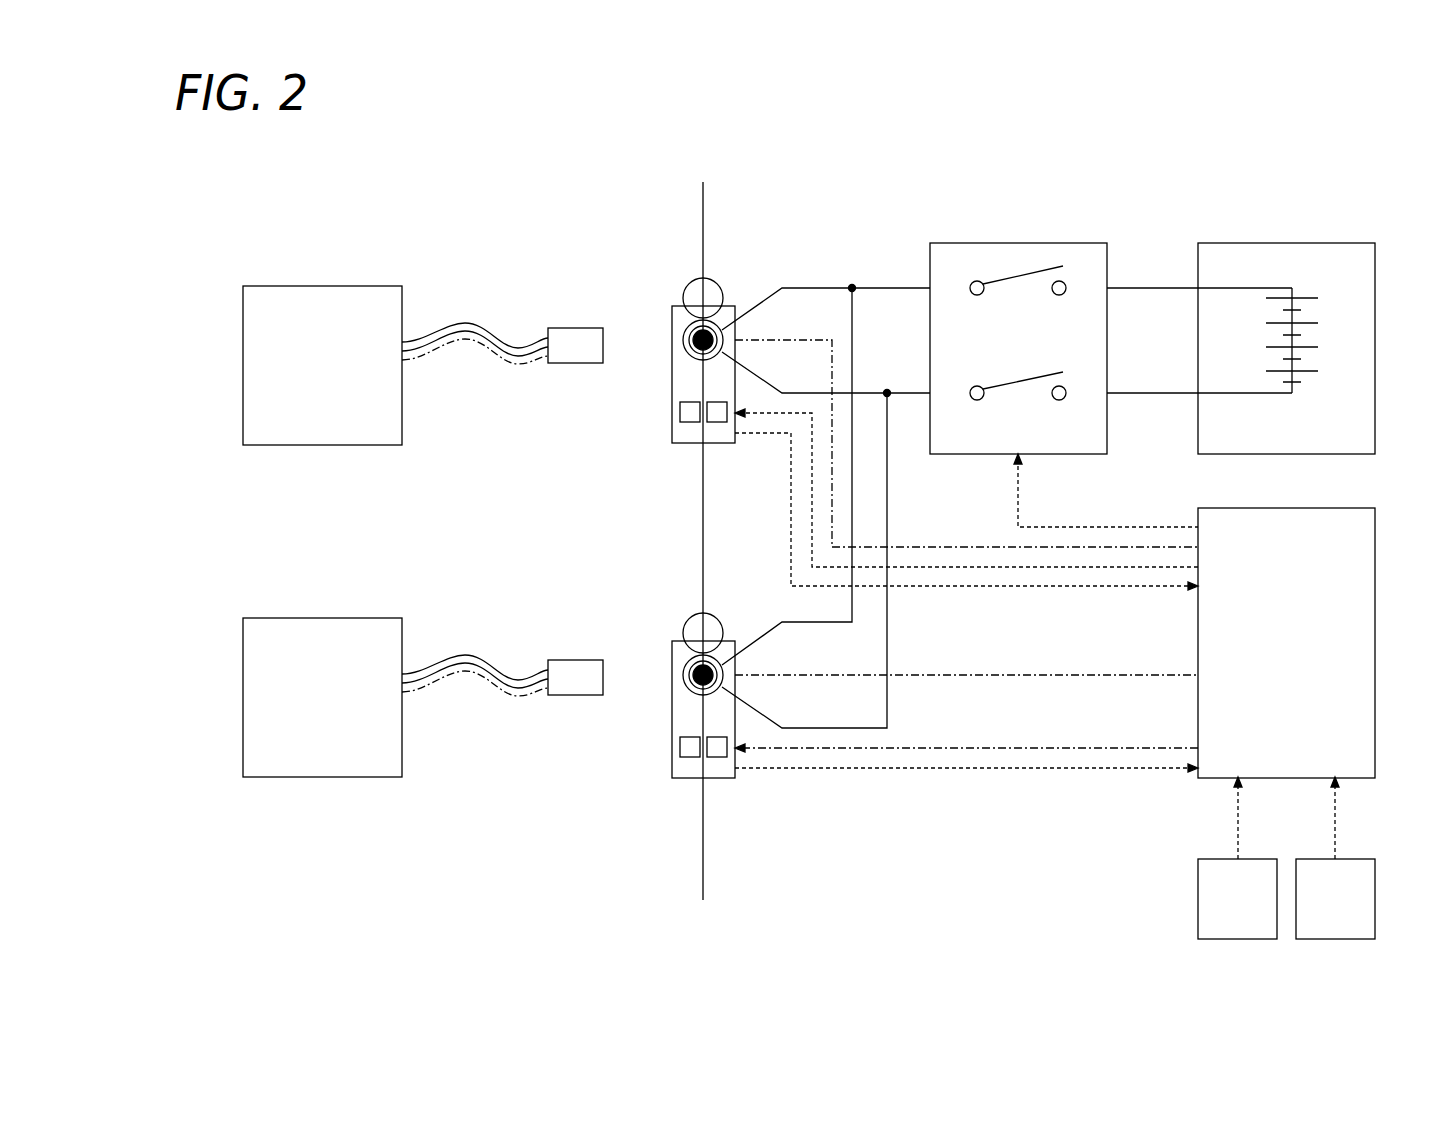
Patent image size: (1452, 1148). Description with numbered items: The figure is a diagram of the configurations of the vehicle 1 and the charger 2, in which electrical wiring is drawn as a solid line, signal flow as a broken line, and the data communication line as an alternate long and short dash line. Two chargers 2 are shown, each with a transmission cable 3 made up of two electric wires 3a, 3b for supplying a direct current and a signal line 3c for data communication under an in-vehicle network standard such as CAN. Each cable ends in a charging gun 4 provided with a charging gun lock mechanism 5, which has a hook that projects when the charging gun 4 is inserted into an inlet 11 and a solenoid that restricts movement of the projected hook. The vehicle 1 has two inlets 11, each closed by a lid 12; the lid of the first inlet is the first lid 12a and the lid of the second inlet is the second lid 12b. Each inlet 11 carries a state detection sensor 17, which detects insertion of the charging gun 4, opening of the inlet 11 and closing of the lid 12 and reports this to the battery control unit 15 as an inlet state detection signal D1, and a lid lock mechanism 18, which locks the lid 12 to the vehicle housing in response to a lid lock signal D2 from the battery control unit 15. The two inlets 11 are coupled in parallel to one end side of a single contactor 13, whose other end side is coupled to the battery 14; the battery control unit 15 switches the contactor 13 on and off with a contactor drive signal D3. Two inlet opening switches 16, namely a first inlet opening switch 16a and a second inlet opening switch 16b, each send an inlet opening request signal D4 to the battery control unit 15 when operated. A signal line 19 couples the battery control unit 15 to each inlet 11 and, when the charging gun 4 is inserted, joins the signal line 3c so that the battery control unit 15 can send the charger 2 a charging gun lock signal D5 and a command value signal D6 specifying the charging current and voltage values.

The vehicle 1 is at (748, 133).
The charger 2 is at (313, 378).
The transmission cable 3 is at (475, 443).
The electric wire 3a is at (472, 328).
The electric wire 3b is at (410, 233).
The signal line 3c is at (437, 328).
The charging gun 4 is at (578, 467).
The charging gun lock mechanism 5 is at (580, 328).
The inlet 11 is at (698, 362).
The lid 12 is at (753, 467).
The first lid 12a is at (718, 283).
The second lid 12b is at (719, 617).
The contactor 13 is at (1050, 243).
The battery 14 is at (1328, 243).
The battery control unit 15 is at (1277, 651).
The inlet opening switch 16 is at (1286, 899).
The first inlet opening switch 16a is at (1220, 898).
The second inlet opening switch 16b is at (1318, 898).
The state detection sensor 17 is at (692, 425).
The lid lock mechanism 18 is at (717, 423).
The signal line 19 is at (966, 507).
The inlet state detection signal D1 is at (1075, 587).
The lid lock signal D2 is at (1025, 567).
The contactor drive signal D3 is at (1128, 527).
The inlet opening request signal D4 is at (1238, 818).
The charging gun lock signal D5 is at (966, 507).
The command value signal D6 is at (975, 547).